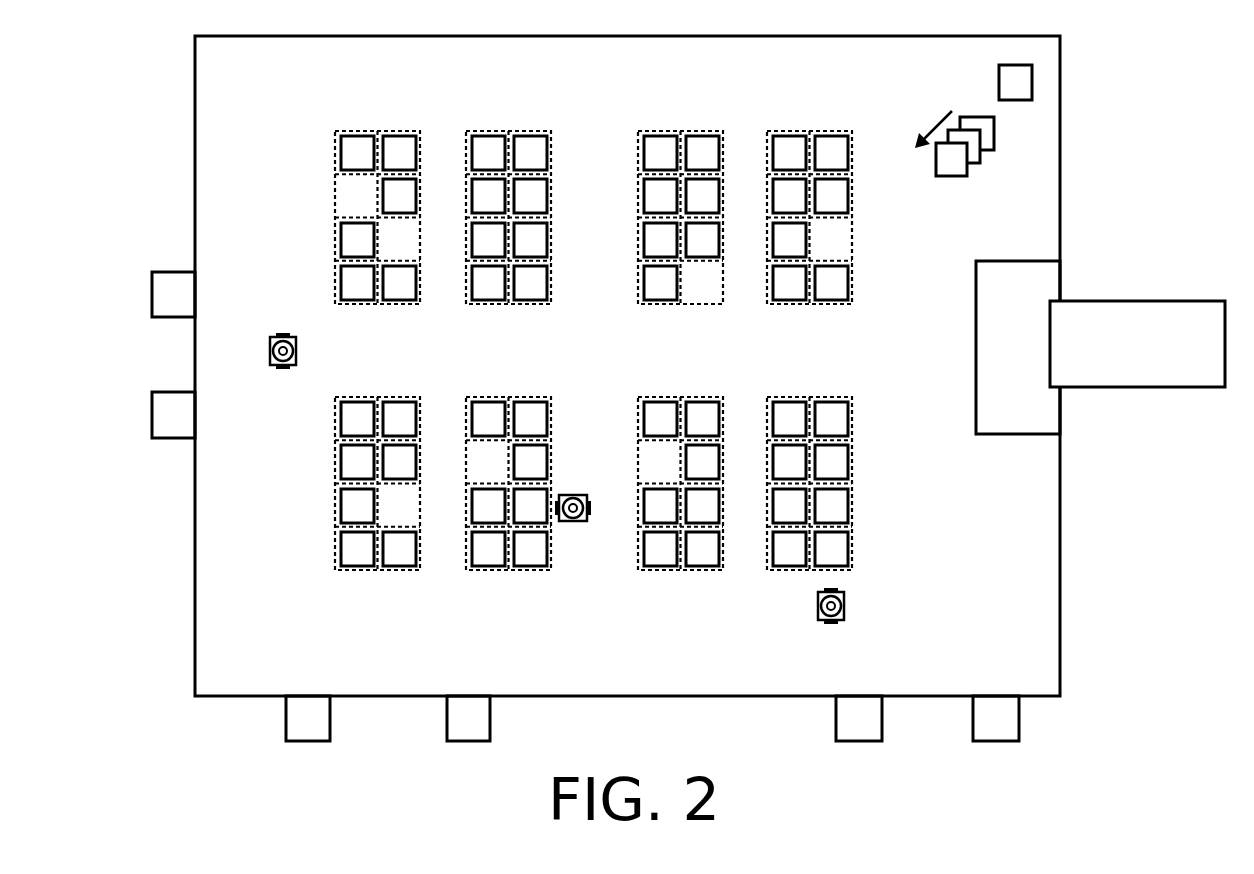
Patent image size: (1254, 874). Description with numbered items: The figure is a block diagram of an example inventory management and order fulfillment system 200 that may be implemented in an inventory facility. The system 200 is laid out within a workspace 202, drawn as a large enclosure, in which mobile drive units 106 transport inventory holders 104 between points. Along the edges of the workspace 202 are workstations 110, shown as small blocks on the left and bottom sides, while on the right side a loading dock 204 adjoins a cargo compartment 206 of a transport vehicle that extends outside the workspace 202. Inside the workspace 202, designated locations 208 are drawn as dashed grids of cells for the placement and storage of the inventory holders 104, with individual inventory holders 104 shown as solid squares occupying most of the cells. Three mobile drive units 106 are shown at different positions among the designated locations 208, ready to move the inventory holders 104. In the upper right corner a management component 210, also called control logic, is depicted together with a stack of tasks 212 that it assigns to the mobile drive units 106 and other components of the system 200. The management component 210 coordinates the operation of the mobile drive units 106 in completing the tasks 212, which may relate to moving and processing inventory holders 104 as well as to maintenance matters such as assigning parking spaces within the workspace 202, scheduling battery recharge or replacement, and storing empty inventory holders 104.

The inventory management and/or order fulfillment system 200 is at (126, 221).
The workspace 202 is at (268, 112).
The inventory holders 104 is at (787, 145).
The mobile drive units 106 is at (283, 334).
The workstations 110 is at (157, 295).
The loading docks 204 is at (989, 365).
The cargo compartments 206 is at (1167, 313).
The designated locations 208 is at (510, 131).
The management component 210 is at (1005, 83).
The tasks 212 is at (953, 185).